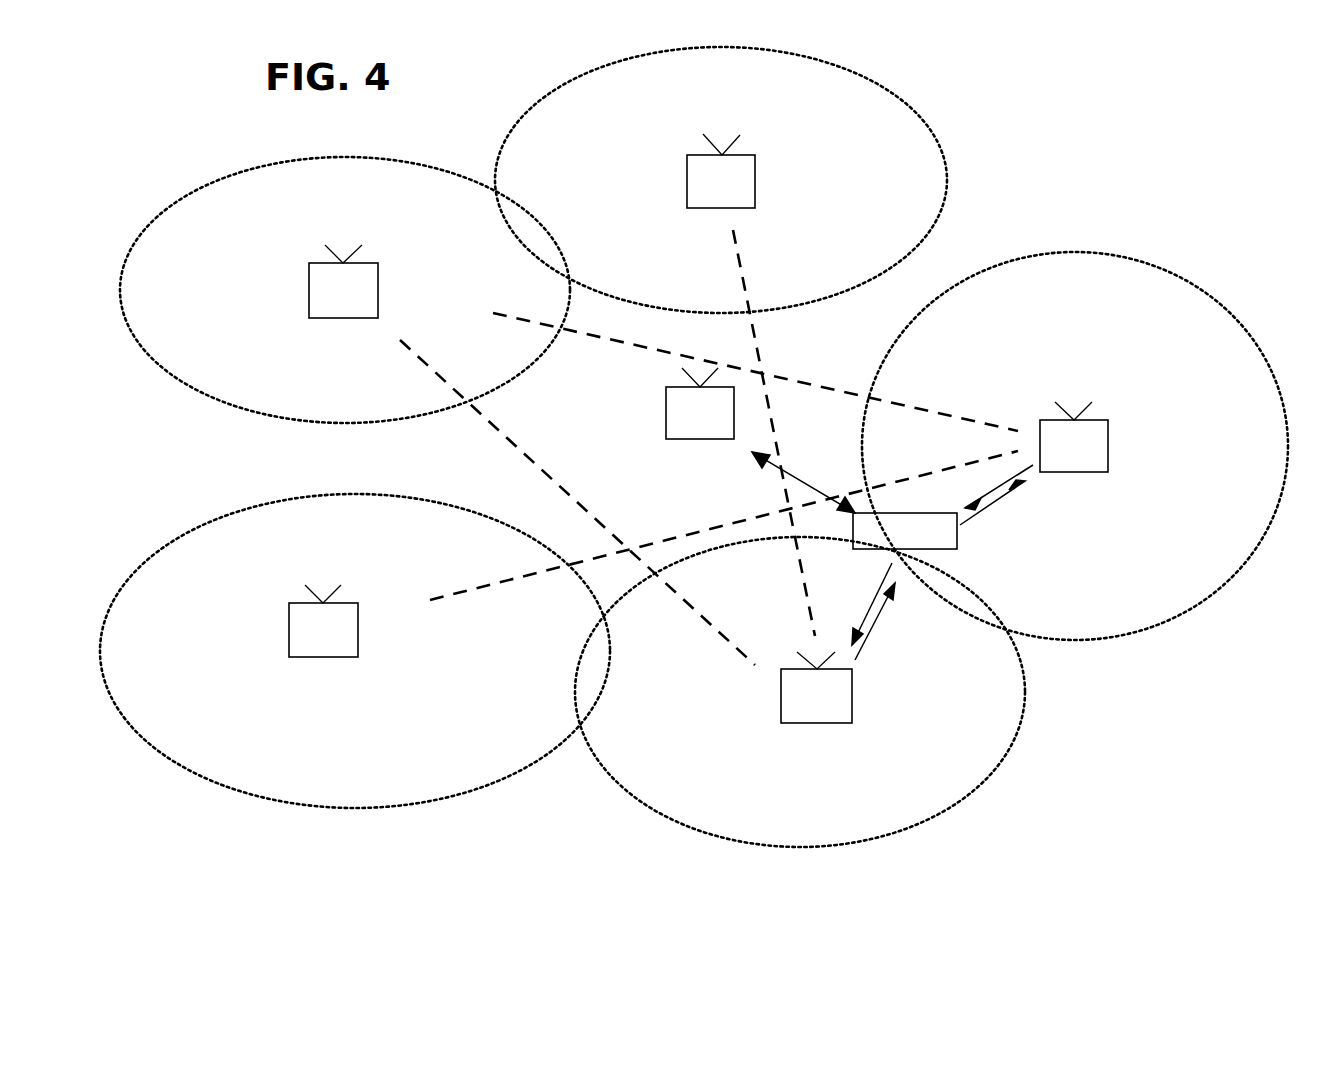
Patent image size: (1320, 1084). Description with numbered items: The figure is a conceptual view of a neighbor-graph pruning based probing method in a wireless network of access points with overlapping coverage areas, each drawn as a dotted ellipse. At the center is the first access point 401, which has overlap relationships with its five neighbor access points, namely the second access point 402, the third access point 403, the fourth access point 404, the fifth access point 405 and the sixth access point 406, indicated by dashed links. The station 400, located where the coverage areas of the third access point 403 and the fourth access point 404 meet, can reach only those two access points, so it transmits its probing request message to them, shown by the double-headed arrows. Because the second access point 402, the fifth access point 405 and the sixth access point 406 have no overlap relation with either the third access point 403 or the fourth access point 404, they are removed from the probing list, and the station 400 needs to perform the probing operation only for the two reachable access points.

The station 400 is at (905, 513).
The AP#1 401 is at (666, 417).
The AP#2 402 is at (755, 172).
The AP#3 403 is at (1108, 440).
The AP#4 404 is at (852, 690).
The AP#5 405 is at (289, 632).
The AP#6 406 is at (309, 296).